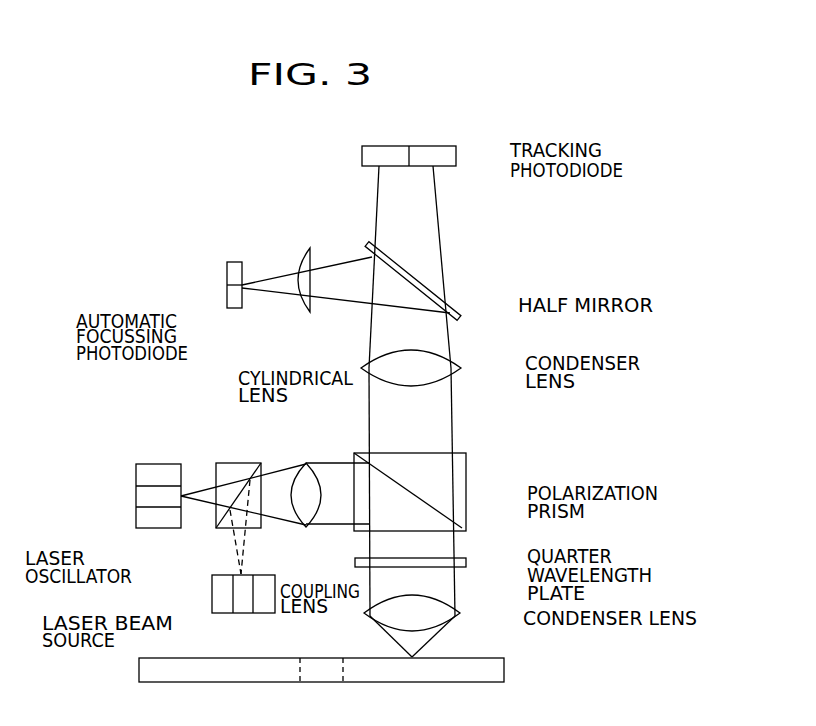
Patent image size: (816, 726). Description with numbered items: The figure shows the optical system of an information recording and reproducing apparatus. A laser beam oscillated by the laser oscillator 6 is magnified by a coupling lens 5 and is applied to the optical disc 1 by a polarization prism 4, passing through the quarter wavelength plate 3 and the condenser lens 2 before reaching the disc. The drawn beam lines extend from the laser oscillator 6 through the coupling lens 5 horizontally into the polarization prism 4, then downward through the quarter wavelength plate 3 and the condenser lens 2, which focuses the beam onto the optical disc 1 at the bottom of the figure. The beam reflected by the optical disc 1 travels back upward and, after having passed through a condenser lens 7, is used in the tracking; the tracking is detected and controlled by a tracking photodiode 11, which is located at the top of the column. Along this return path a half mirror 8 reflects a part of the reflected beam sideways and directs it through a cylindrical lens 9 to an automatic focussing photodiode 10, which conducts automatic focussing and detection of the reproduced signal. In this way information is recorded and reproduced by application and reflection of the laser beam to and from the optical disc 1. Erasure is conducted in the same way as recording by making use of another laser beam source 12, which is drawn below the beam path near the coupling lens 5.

The optical disc 1 is at (504, 668).
The condenser lens 2 is at (460, 613).
The quarter wavelength plate 3 is at (466, 562).
The polarization prism 4 is at (466, 490).
The coupling lens 5 is at (305, 527).
The laser oscillator 6 is at (160, 528).
The condenser lens 7 is at (461, 368).
The half mirror 8 is at (461, 318).
The cylindrical lens 9 is at (308, 312).
The automatic focussing photodiode 10 is at (235, 308).
The tracking photodiode 11 is at (456, 156).
The laser beam source 12 is at (212, 603).